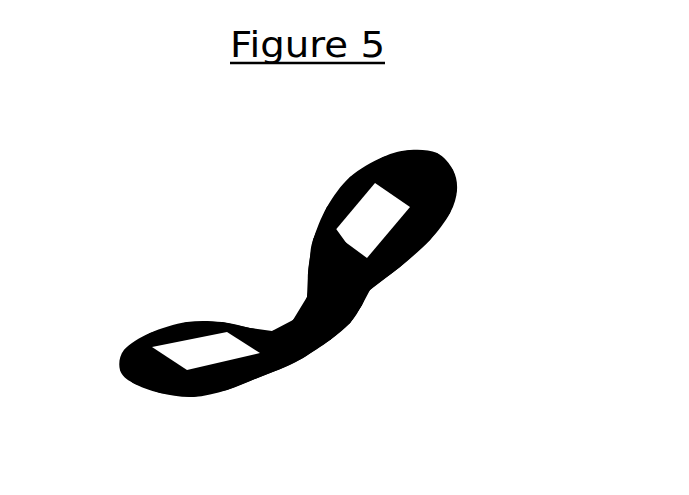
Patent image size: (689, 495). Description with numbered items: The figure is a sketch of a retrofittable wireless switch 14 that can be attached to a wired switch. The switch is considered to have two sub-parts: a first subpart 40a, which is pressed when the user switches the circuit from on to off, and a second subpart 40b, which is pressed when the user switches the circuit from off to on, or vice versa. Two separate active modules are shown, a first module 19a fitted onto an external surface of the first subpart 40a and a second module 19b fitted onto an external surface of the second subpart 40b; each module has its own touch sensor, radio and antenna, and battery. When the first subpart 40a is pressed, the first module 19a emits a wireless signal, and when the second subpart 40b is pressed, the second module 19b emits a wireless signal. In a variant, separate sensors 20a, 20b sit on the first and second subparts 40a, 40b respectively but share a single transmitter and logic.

The wireless switch 14 is at (360, 222).
The first active module 19a is at (340, 183).
The first sensor 20a is at (342, 195).
The second active module 19b is at (182, 303).
The second sensor 20b is at (200, 347).
The first subpart 40a is at (457, 148).
The second subpart 40b is at (285, 403).